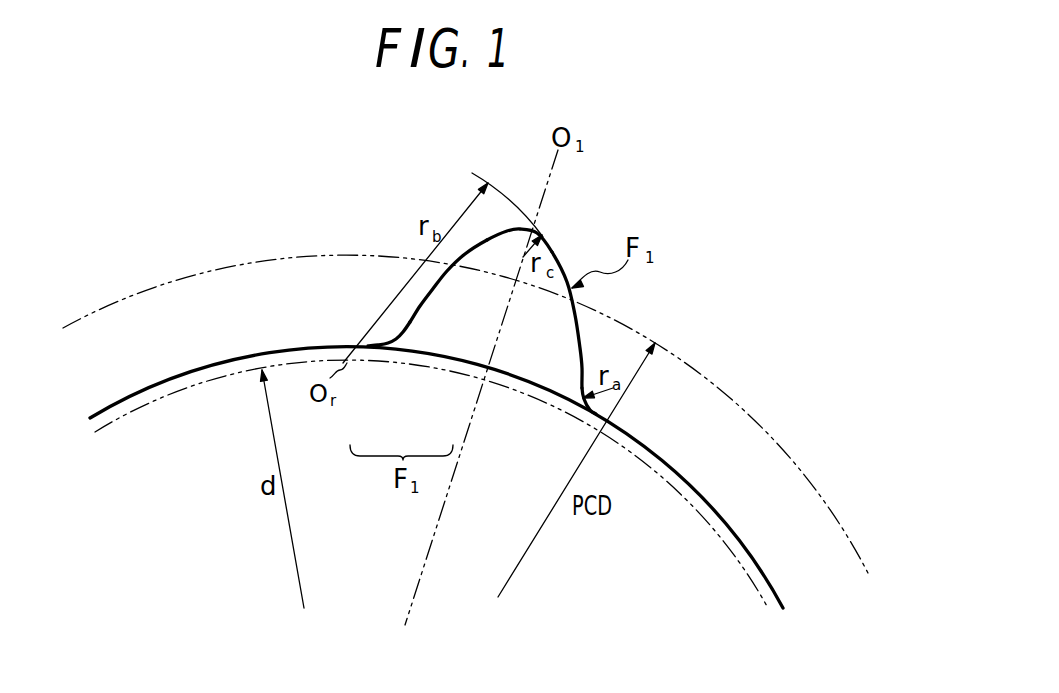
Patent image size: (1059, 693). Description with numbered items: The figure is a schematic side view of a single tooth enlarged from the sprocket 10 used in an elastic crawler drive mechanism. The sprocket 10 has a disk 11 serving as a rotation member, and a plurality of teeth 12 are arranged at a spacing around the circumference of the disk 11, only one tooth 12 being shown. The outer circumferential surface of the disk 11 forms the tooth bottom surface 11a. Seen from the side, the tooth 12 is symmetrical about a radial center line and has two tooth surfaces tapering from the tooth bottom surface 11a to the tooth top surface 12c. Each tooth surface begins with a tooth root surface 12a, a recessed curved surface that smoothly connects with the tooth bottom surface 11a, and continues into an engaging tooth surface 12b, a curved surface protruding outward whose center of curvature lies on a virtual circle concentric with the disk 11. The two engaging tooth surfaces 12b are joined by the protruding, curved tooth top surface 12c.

The sprocket 10 is at (692, 308).
The disk 11 is at (447, 450).
The tooth bottom surface 11a is at (281, 349).
The tooth 12 is at (502, 295).
The tooth root surface 12a is at (396, 348).
The engaging tooth surface 12b is at (439, 286).
The tooth top surface 12c is at (521, 229).